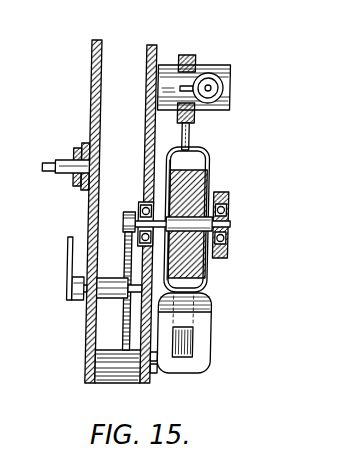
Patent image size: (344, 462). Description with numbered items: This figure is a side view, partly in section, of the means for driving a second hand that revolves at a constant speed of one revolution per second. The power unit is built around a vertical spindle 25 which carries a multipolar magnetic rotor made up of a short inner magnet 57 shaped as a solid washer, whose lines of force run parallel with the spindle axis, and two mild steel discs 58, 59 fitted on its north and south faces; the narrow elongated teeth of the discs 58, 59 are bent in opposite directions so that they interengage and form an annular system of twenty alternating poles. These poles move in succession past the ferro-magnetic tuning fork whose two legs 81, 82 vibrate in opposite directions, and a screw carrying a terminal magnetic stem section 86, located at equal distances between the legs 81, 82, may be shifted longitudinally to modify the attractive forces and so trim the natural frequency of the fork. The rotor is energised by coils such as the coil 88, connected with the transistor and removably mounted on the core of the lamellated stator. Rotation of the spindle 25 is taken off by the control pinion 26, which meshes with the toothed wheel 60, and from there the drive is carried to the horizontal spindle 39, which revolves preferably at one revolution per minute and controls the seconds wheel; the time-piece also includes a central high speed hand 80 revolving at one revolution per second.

The horizontal spindle 39 is at (52, 162).
The tuning fork leg 82 is at (183, 55).
The magnetic stem section 86 is at (210, 85).
The tuning fork leg 81 is at (197, 117).
The mild steel disc 58 is at (172, 153).
The mild steel disc 59 is at (211, 149).
The vertical spindle 25 is at (155, 203).
The control pinion 26 is at (128, 228).
The central high speed hand 80 is at (72, 250).
The toothed wheel 60 is at (132, 323).
The inner magnet 57 is at (200, 270).
The coil 88 is at (200, 365).